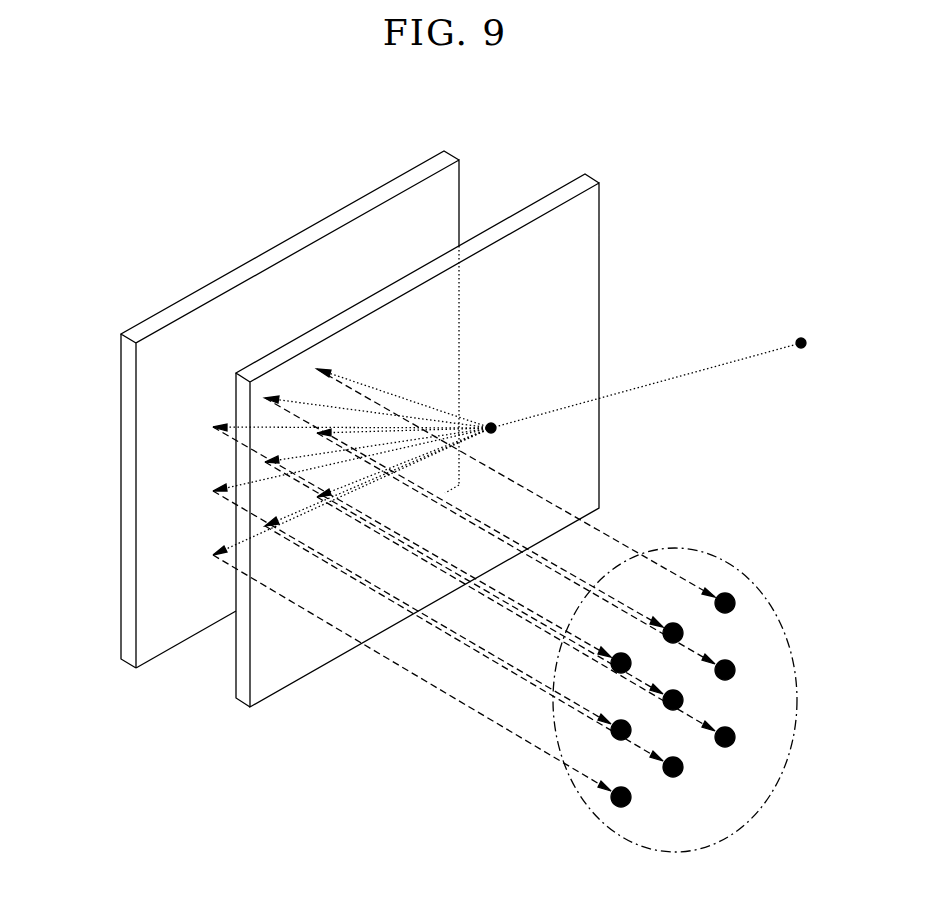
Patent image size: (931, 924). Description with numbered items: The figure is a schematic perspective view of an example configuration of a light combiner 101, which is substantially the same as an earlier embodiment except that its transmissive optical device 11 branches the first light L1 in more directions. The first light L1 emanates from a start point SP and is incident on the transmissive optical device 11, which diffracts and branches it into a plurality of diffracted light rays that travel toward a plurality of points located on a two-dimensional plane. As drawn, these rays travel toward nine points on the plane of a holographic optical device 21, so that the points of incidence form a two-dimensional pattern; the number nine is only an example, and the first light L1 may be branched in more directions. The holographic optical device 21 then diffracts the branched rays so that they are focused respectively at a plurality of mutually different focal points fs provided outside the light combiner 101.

The light combiner 101 is at (190, 192).
The holographic optical device 21 is at (452, 153).
The transmissive optical device 11 is at (595, 175).
The first light L1 is at (718, 364).
The start point SP is at (803, 350).
The focal points fs is at (755, 587).